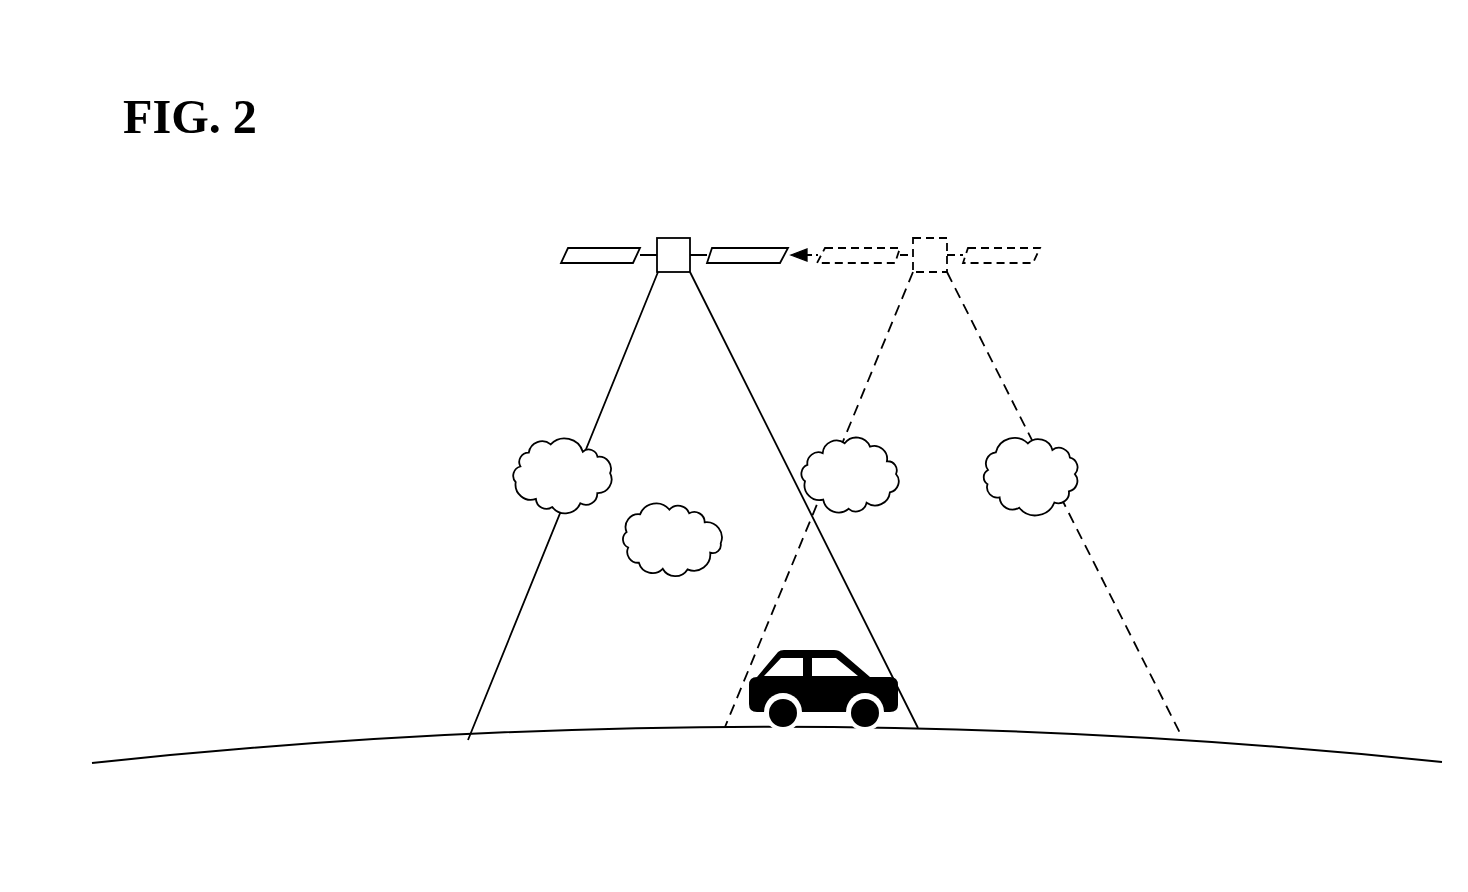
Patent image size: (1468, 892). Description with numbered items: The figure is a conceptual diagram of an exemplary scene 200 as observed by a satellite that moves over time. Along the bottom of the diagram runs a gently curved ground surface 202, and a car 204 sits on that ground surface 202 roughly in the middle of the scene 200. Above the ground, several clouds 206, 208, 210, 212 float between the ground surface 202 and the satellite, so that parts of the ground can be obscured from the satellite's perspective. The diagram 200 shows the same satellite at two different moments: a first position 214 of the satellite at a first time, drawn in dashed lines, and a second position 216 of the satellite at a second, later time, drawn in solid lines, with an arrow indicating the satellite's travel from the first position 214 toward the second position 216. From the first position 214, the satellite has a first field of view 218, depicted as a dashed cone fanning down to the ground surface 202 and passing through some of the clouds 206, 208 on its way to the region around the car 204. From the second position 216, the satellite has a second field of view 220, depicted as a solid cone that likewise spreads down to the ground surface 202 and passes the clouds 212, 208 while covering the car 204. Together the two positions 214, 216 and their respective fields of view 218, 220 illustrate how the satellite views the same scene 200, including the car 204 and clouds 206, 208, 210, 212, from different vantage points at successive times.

The scene 200 is at (1340, 288).
The ground surface 202 is at (1293, 739).
The car 204 is at (783, 727).
The cloud 206 is at (1075, 461).
The cloud 208 is at (882, 446).
The cloud 210 is at (687, 506).
The cloud 212 is at (607, 460).
The first position of the satellite 214 is at (947, 238).
The second position of the satellite 216 is at (690, 238).
The first field of view 218 is at (983, 343).
The second field of view 220 is at (732, 353).